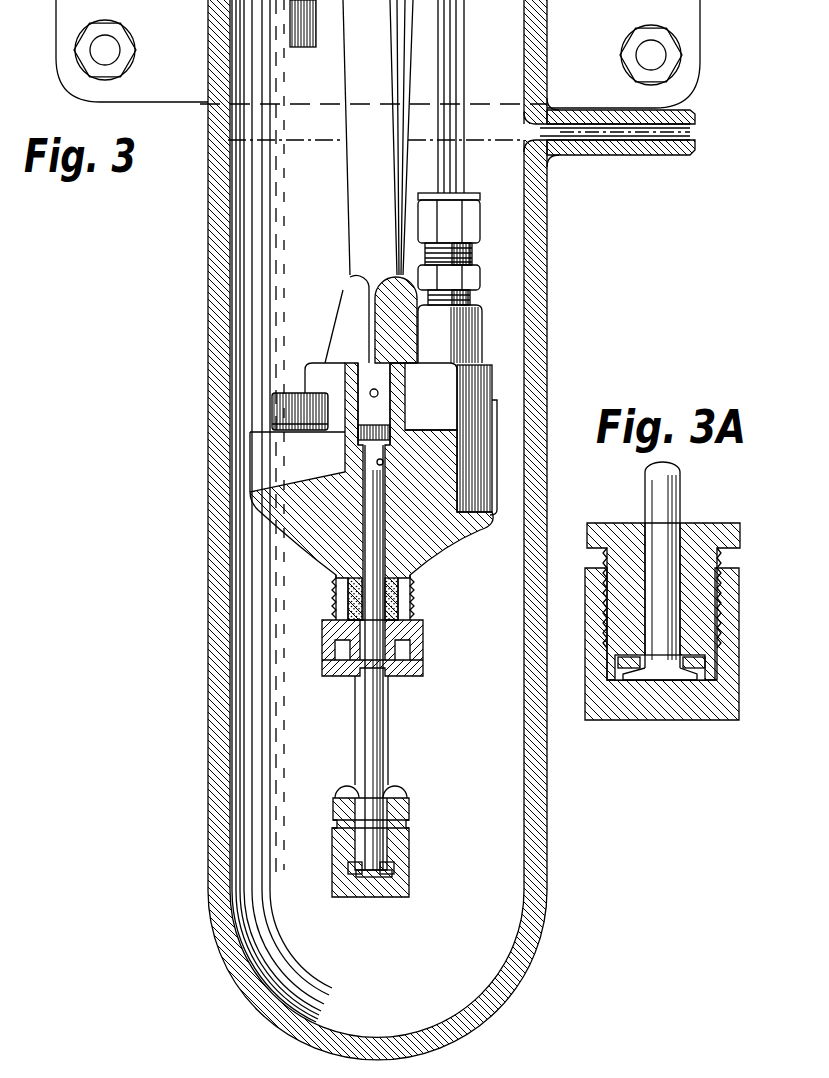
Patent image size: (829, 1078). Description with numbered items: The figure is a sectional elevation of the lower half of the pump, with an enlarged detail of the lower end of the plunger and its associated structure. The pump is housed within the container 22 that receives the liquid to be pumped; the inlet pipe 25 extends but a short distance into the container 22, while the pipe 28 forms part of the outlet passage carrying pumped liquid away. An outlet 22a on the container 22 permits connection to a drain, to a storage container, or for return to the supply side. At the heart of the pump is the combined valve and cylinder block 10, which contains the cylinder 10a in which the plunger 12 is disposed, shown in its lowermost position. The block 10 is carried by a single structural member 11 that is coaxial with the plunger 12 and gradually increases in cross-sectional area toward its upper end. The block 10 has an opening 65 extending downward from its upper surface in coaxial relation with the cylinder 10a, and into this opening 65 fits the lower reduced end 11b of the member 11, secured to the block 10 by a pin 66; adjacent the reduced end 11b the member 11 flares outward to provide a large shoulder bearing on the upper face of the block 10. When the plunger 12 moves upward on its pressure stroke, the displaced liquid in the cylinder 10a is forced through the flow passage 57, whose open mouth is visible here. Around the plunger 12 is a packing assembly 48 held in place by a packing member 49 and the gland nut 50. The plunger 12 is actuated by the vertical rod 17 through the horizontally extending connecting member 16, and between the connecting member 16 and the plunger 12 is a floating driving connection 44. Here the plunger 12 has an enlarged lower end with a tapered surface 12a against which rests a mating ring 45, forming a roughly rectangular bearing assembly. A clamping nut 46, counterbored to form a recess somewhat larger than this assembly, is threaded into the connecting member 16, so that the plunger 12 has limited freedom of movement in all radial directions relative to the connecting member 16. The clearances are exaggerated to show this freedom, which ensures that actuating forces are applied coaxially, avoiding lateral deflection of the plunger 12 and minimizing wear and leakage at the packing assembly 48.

In FIG. 3, the container 22 is at (208, 347).
In FIG. 3, the outlet 22a is at (645, 138).
In FIG. 3, the inlet pipe 25 is at (297, 48).
In FIG. 3, the pipe 28 is at (463, 68).
In FIG. 3, the structural member 11 is at (352, 200).
In FIG. 3, the lower reduced end 11b is at (392, 378).
In FIG. 3, the pin 66 is at (370, 392).
In FIG. 3, the opening 65 is at (390, 429).
In FIG. 3, the combined valve and cylinder block 10 is at (492, 453).
In FIG. 3, the flow passage 57 is at (376, 460).
In FIG. 3, the cylinder 10a is at (375, 545).
In FIG. 3, the packing assembly 48 is at (394, 598).
In FIG. 3, the gland nut 50 is at (425, 638).
In FIG. 3, the packing member 49 is at (425, 663).
In FIG. 3, the vertical rod 17 is at (355, 718).
In FIG. 3, the plunger 12 is at (385, 735).
In FIG. 3A, the plunger 12 is at (655, 498).
In FIG. 3, the clamping nut 46 is at (335, 803).
In FIG. 3A, the clamping nut 46 is at (598, 533).
In FIG. 3, the connecting member 16 is at (333, 848).
In FIG. 3A, the connecting member 16 is at (720, 708).
In FIG. 3, the floating driving connection 44 is at (371, 858).
In FIG. 3A, the floating driving connection 44 is at (649, 612).
In FIG. 3, the mating ring 45 is at (396, 868).
In FIG. 3A, the mating ring 45 is at (628, 665).
In FIG. 3, the tapered surface 12a is at (375, 878).
In FIG. 3A, the tapered surface 12a is at (665, 680).